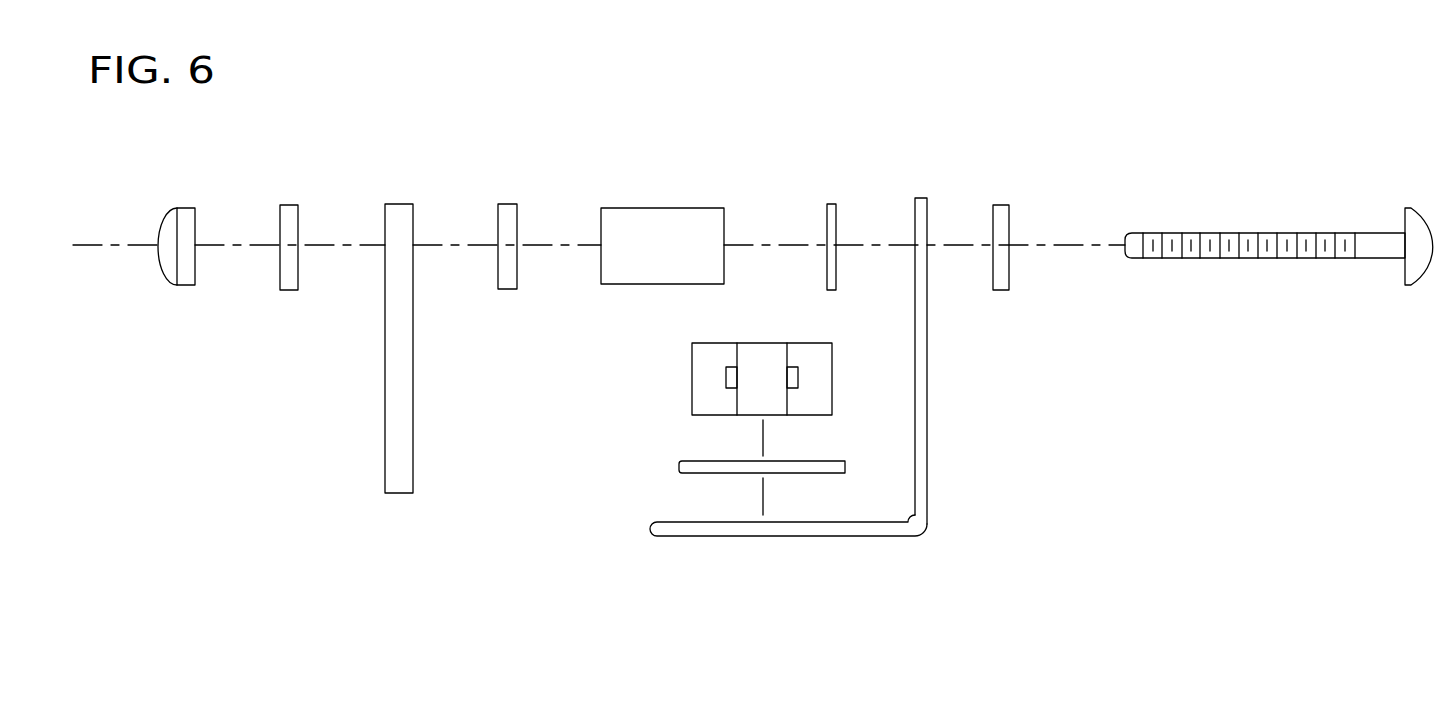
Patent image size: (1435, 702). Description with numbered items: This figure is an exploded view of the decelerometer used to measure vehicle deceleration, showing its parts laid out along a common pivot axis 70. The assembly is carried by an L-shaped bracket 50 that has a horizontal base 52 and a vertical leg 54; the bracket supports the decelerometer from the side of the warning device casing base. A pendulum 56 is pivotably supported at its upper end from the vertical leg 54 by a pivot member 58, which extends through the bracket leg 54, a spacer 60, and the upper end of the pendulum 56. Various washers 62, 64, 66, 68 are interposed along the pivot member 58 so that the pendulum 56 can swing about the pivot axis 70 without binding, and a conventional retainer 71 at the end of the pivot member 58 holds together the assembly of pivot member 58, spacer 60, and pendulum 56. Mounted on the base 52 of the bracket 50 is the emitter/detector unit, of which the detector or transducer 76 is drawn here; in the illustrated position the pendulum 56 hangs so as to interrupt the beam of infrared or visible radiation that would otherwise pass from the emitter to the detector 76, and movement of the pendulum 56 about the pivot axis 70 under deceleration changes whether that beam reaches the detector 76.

The L-shaped bracket 50 is at (847, 393).
The base 52 is at (790, 536).
The vertical leg 54 is at (927, 353).
The pendulum 56 is at (385, 410).
The pivot member 58 is at (1190, 258).
The spacer 60 is at (695, 208).
The washer 62 is at (282, 205).
The washer 64 is at (500, 204).
The washer 66 is at (830, 204).
The washer 68 is at (997, 205).
The pivot axis 70 is at (240, 245).
The retainer 71 is at (163, 222).
The detector 76 is at (692, 377).